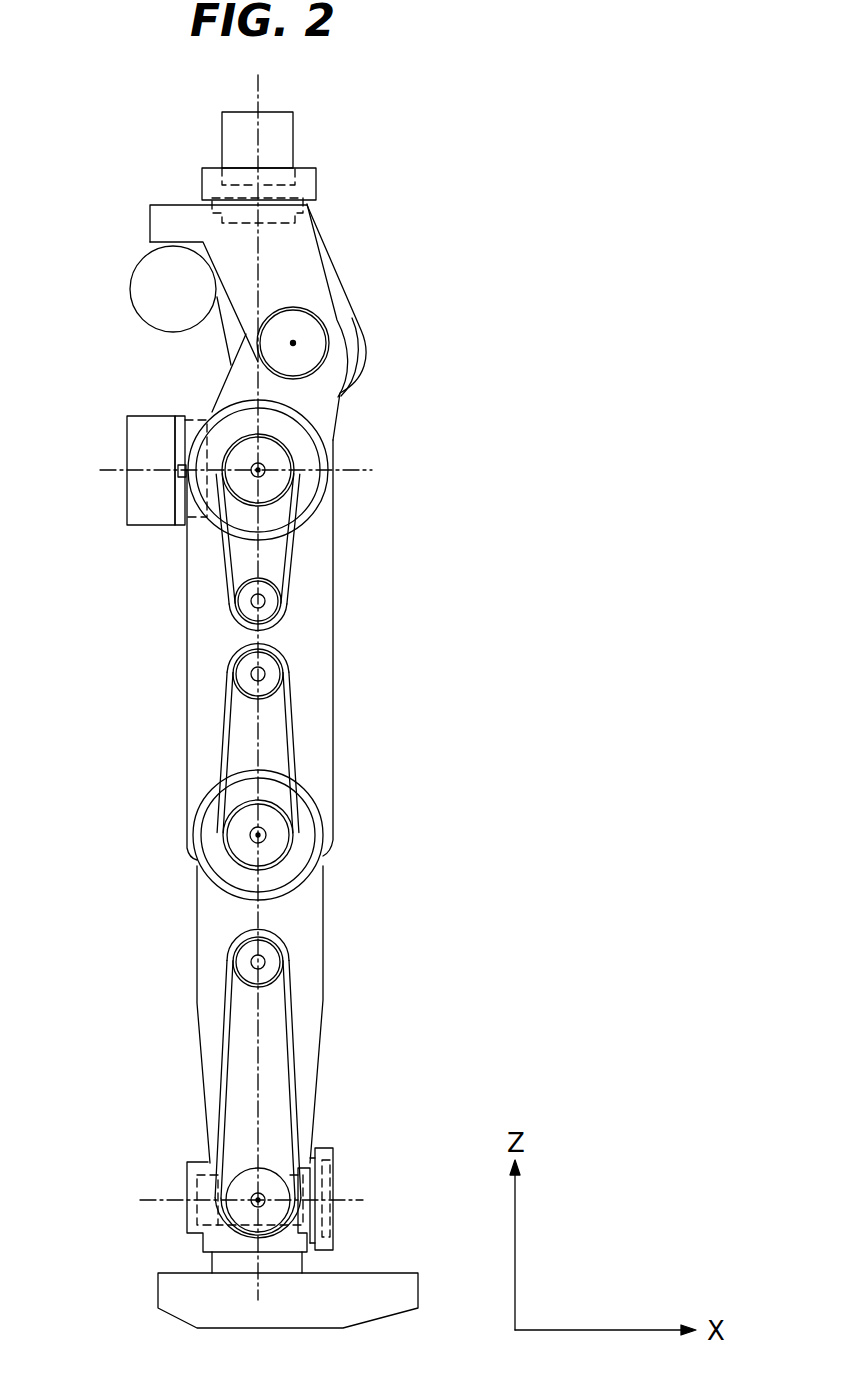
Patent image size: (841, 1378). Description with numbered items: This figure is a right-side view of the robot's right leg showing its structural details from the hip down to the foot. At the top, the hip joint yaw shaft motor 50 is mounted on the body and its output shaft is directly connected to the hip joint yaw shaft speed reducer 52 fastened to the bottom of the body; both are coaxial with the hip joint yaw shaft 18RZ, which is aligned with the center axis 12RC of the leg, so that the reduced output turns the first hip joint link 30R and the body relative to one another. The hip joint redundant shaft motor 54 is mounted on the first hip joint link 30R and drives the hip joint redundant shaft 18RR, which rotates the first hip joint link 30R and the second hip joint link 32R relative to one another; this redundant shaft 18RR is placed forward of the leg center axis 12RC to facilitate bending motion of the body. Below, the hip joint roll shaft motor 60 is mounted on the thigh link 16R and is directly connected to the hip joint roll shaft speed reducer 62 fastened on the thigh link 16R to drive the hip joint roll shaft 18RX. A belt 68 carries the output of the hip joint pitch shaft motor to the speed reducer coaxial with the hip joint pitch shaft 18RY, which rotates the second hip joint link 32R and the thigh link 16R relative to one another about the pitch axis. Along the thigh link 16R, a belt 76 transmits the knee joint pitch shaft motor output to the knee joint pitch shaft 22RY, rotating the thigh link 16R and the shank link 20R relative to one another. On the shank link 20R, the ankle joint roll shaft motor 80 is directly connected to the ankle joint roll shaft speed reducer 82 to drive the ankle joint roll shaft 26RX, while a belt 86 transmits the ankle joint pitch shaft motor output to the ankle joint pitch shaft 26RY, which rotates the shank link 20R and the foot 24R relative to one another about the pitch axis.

The center axis of the leg 12RC is at (260, 84).
The hip joint yaw shaft motor 50 is at (286, 136).
The hip joint yaw shaft speed reducer 52 is at (214, 192).
The hip joint yaw shaft 18RZ is at (258, 241).
The first hip joint link 30R is at (312, 271).
The hip joint redundant shaft 18RR is at (293, 343).
The hip joint redundant shaft motor 54 is at (140, 277).
The hip joint roll shaft speed reducer 62 is at (185, 422).
The hip joint roll shaft motor 60 is at (135, 455).
The second hip joint link 32R is at (322, 400).
The hip joint pitch shaft 18RY is at (265, 465).
The hip joint roll shaft 18RX is at (370, 470).
The belt 68 is at (300, 538).
The thigh link 16R is at (320, 641).
The belt 76 is at (293, 717).
The knee joint pitch shaft 22RY is at (262, 833).
The shank link 20R is at (316, 933).
The belt 86 is at (290, 1046).
The ankle joint roll shaft motor 80 is at (200, 1166).
The ankle joint roll shaft speed reducer 82 is at (328, 1167).
The ankle joint roll shaft 26RX is at (350, 1198).
The ankle joint pitch shaft 26RY is at (252, 1202).
The foot 24R is at (350, 1284).